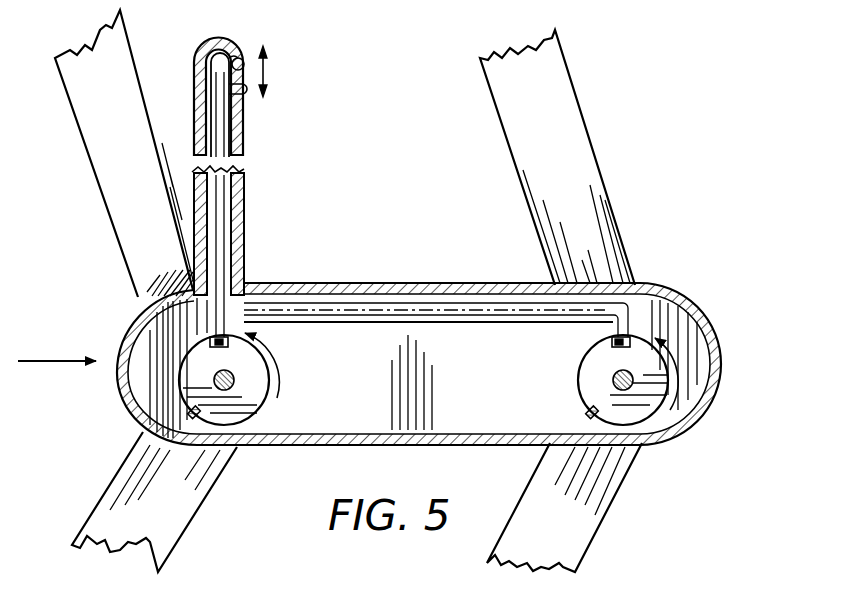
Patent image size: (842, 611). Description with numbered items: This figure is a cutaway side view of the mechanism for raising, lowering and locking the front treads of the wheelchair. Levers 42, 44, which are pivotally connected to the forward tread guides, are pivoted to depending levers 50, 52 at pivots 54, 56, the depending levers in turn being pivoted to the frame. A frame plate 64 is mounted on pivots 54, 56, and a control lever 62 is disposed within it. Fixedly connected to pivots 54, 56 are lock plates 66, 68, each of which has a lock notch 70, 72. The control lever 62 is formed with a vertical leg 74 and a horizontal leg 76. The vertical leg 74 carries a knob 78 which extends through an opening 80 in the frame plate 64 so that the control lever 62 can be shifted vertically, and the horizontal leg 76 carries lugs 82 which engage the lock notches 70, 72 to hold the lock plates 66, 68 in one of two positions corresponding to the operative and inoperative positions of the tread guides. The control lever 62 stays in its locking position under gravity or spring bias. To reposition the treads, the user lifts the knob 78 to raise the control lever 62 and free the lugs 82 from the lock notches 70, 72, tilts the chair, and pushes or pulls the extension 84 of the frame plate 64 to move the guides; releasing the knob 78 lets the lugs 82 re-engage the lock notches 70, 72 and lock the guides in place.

The lever 42 is at (125, 497).
The lever 44 is at (590, 525).
The depending lever 50 is at (105, 123).
The depending lever 52 is at (530, 143).
The pivot 54 is at (232, 378).
The pivot 56 is at (614, 378).
The control lever 62 is at (209, 97).
The frame plate 64 is at (404, 280).
The lock plate 66 is at (260, 416).
The lock plate 68 is at (585, 385).
The lock notch 70 is at (148, 438).
The lock notch 72 is at (648, 328).
The vertical leg 74 is at (240, 140).
The horizontal leg 76 is at (393, 322).
The knob 78 is at (246, 92).
The opening 80 is at (240, 60).
The lugs 82 is at (212, 326).
The extension 84 is at (246, 210).